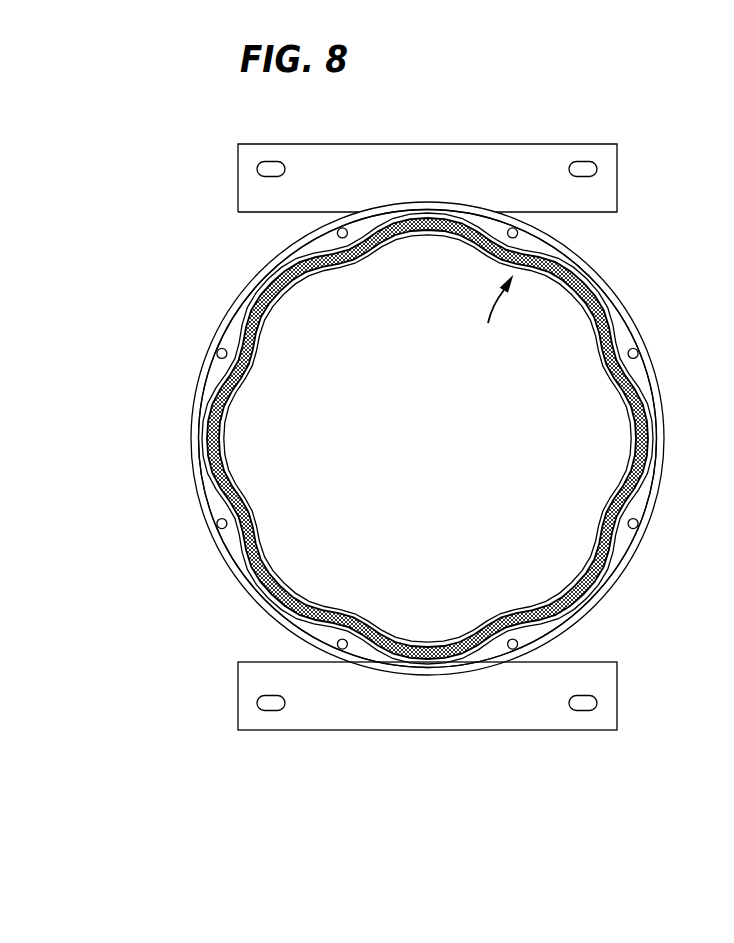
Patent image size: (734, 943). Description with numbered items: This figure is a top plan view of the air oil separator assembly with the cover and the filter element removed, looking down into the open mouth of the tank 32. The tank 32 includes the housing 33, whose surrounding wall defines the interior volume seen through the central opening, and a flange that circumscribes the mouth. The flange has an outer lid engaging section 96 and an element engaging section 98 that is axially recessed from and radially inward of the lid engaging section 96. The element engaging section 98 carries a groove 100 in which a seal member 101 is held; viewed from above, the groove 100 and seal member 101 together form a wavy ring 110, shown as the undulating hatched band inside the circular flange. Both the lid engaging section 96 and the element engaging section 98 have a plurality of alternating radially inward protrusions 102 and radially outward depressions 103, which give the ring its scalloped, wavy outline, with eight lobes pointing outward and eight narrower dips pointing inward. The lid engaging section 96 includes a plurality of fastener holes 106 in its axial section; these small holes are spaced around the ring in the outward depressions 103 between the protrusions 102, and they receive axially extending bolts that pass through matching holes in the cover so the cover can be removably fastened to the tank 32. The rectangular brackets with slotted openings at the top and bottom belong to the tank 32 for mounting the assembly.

The tank 32 is at (290, 245).
The housing 33 is at (203, 369).
The lid engaging section 96 is at (210, 493).
The element engaging section 98 is at (265, 572).
The groove 100 is at (567, 258).
The seal member 101 is at (247, 315).
The radially inward protrusions 102 is at (257, 342).
The radially outward depressions 103 is at (197, 433).
The fastener holes 106 is at (222, 523).
The wavy ring 110 is at (477, 315).